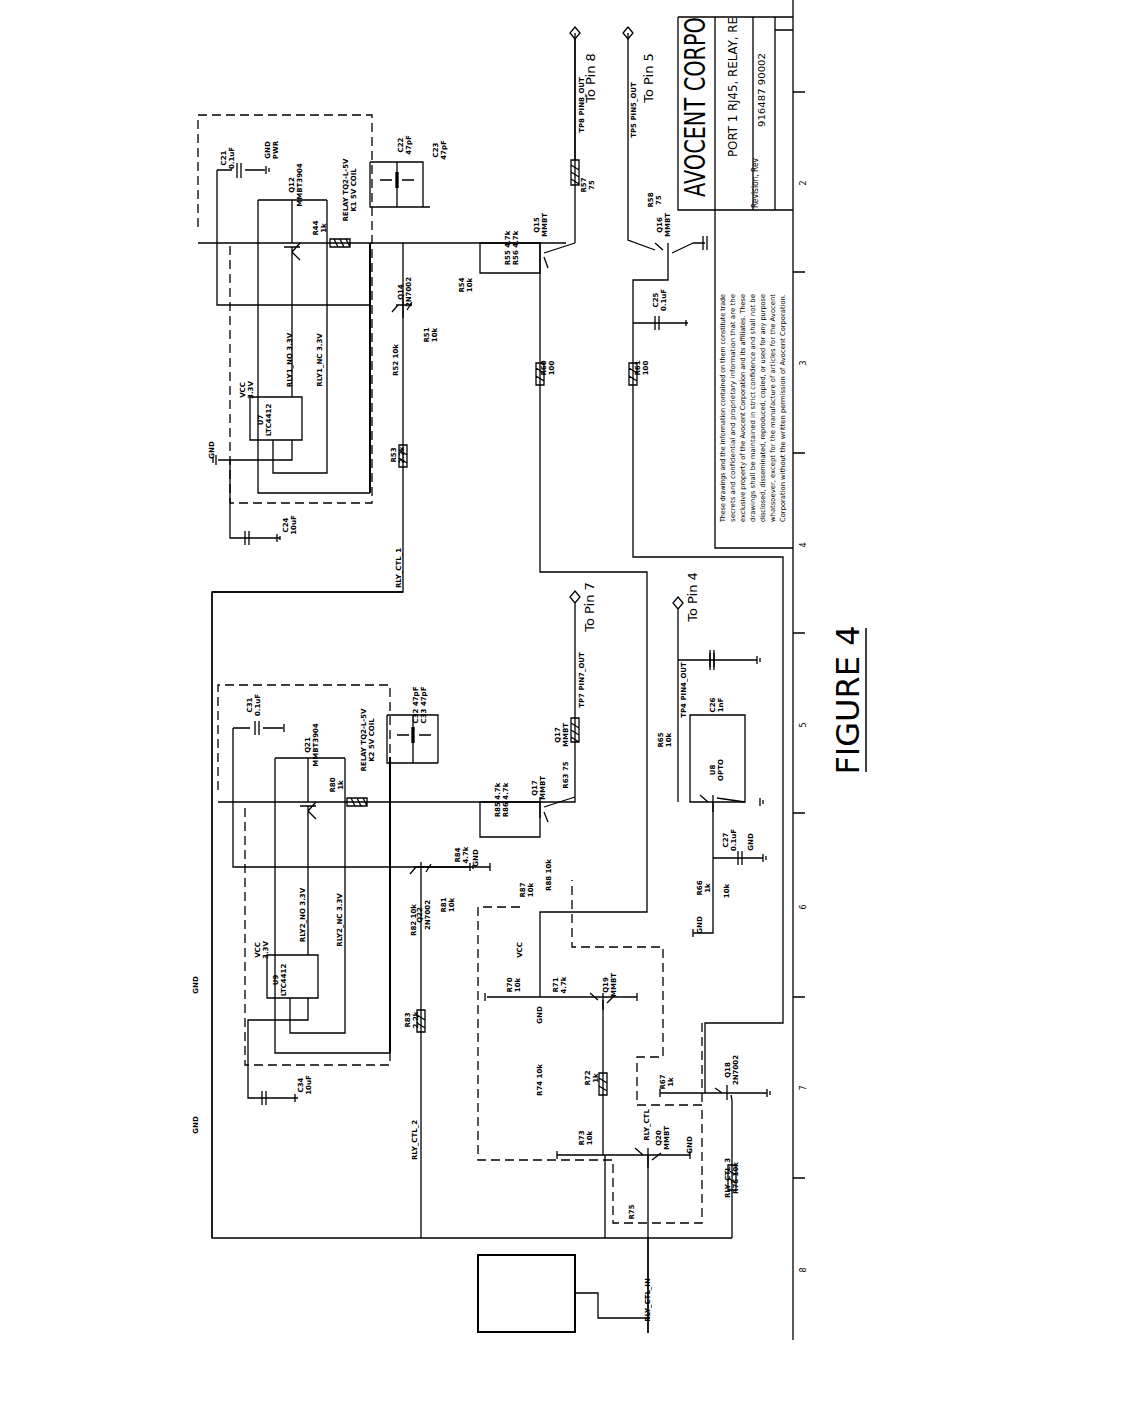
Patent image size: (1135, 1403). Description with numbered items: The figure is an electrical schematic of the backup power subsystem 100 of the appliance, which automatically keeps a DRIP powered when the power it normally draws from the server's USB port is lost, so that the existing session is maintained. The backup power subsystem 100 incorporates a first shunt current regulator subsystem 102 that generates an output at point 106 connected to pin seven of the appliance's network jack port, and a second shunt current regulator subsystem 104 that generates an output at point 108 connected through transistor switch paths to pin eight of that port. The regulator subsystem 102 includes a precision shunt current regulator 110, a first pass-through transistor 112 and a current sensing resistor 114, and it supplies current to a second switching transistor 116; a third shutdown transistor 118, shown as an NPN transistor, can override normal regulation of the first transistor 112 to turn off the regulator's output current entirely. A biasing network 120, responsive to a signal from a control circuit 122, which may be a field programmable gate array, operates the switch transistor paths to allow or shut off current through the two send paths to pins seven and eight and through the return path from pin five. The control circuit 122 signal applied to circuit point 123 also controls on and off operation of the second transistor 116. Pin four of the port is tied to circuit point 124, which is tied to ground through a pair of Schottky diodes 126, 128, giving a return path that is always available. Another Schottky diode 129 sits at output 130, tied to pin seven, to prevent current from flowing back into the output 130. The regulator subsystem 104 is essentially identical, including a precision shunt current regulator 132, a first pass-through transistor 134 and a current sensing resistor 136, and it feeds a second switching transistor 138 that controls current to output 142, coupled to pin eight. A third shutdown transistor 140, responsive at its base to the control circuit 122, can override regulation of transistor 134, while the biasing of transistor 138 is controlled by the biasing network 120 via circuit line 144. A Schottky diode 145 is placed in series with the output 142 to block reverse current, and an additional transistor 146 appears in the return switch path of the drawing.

The backup power subsystem 100 is at (168, 1104).
The first shunt current regulator subsystem 102 is at (363, 1065).
The second shunt current regulator subsystem 104 is at (318, 115).
The output point of first regulator subsystem 106 is at (388, 805).
The output point of second regulator subsystem 108 is at (367, 247).
The precision shunt current regulator 110 is at (308, 978).
The first (pass through) transistor 112 is at (318, 809).
The current sensing resistor 114 is at (357, 790).
The second (switching) transistor 116 is at (547, 806).
The third (shutdown) transistor 118 is at (425, 877).
The biasing network 120 is at (478, 1113).
The control circuit 122 is at (554, 1280).
The circuit point 123 is at (650, 1312).
The circuit point 124 is at (673, 602).
The Schottky diode 126 is at (713, 653).
The Schottky diode 128 is at (677, 748).
The Schottky diode 129 is at (580, 731).
The output 130 is at (569, 592).
The precision shunt current regulator 132 is at (300, 416).
The first (pass through) transistor 134 is at (288, 253).
The current sensing resistor 136 is at (340, 233).
The second (switching) transistor 138 is at (549, 252).
The third (shutdown) transistor 140 is at (408, 313).
The output 142 is at (568, 36).
The circuit line 144 is at (541, 447).
The Schottky diode 145 is at (574, 180).
The transistor 146 is at (665, 242).